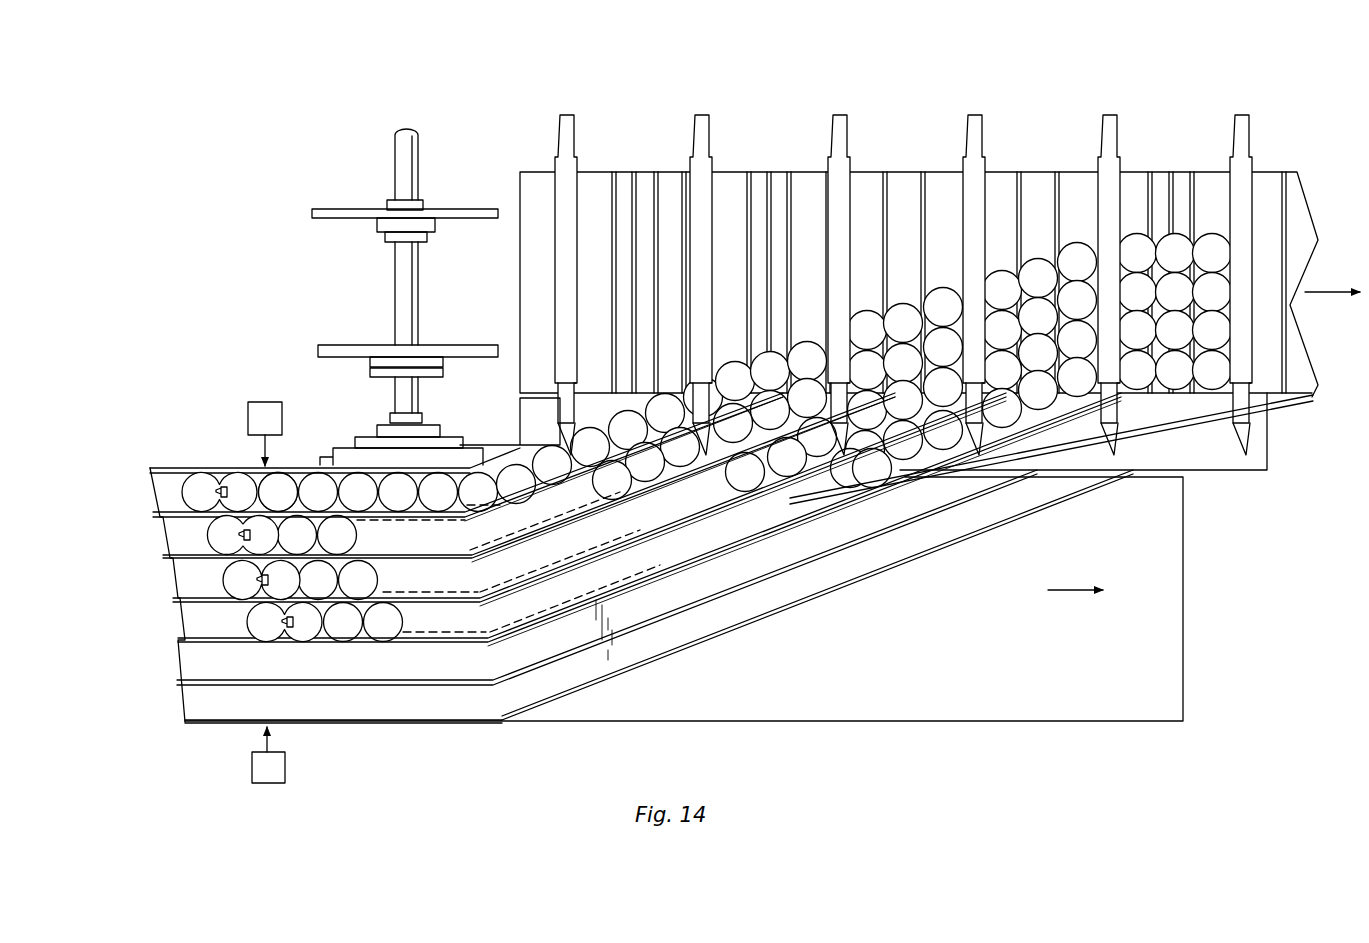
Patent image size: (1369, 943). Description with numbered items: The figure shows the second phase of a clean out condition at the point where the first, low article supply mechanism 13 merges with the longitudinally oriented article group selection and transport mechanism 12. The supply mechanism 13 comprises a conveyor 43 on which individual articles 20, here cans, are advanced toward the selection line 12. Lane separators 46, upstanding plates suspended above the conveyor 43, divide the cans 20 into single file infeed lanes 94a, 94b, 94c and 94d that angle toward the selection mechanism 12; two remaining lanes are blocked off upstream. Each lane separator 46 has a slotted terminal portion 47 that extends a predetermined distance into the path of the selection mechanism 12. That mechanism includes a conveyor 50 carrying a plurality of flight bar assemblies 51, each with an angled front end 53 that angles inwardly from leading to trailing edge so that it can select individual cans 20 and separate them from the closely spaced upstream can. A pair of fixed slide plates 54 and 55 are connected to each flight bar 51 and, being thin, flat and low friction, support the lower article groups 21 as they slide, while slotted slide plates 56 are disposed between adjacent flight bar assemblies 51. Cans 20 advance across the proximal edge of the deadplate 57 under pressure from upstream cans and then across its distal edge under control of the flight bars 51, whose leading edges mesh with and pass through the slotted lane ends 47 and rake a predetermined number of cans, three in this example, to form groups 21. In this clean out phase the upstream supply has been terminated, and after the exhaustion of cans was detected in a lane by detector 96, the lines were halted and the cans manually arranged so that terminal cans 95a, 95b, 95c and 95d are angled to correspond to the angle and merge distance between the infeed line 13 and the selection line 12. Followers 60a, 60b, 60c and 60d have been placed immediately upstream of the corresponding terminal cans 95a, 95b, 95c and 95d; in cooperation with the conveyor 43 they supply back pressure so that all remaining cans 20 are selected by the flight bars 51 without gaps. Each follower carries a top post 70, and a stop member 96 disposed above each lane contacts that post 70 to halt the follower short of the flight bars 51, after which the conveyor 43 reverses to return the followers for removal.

The article group selection and transport mechanism 12 is at (514, 278).
The first article supply mechanism 13 is at (140, 430).
The article 20 is at (1081, 247).
The article group 21 is at (1175, 146).
The conveyor 43 is at (1010, 688).
The lane separator 46 is at (465, 516).
The terminal portion 47 is at (1071, 411).
The conveyor 50 is at (519, 174).
The flight bar assembly 51 is at (702, 115).
The angled front end 53 is at (560, 409).
The slide plate 54 is at (800, 179).
The slide plate 55 is at (870, 177).
The slotted slide plate 56 is at (768, 168).
The deadplate 57 is at (520, 415).
The follower 60a is at (217, 476).
The follower 60b is at (212, 531).
The follower 60c is at (230, 580).
The follower 60d is at (248, 622).
The top post 70 is at (220, 487).
The infeed lane 94a is at (152, 500).
The infeed lane 94b is at (157, 537).
The infeed lane 94c is at (159, 580).
The infeed lane 94d is at (162, 625).
The terminal can 95a is at (283, 484).
The terminal can 95b is at (330, 532).
The terminal can 95c is at (345, 580).
The terminal can 95d is at (335, 634).
The detector / stop member 96 is at (262, 384).